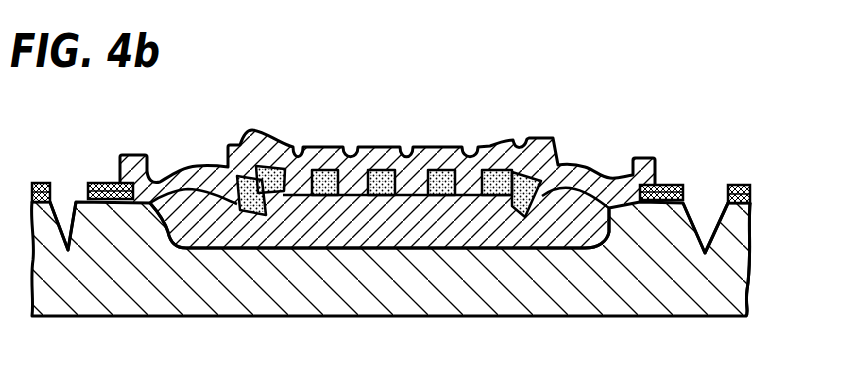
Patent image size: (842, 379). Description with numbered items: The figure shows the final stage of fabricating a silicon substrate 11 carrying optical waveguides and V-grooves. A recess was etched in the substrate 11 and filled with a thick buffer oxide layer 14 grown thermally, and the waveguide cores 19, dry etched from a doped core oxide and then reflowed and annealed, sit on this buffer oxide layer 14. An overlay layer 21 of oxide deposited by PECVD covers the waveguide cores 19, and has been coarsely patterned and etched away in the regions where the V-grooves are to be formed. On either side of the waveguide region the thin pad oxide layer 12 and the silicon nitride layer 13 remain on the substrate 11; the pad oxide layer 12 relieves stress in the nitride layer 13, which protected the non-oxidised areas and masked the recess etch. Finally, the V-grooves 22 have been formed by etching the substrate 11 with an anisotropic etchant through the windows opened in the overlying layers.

The silicon substrate 11 is at (112, 285).
The pad oxide layer 12 is at (750, 198).
The silicon nitride layer 13 is at (664, 184).
The buffer oxide layer 14 is at (380, 232).
The waveguide cores 19 is at (437, 168).
The overlay layer 21 is at (508, 151).
The V-grooves 22 is at (77, 200).